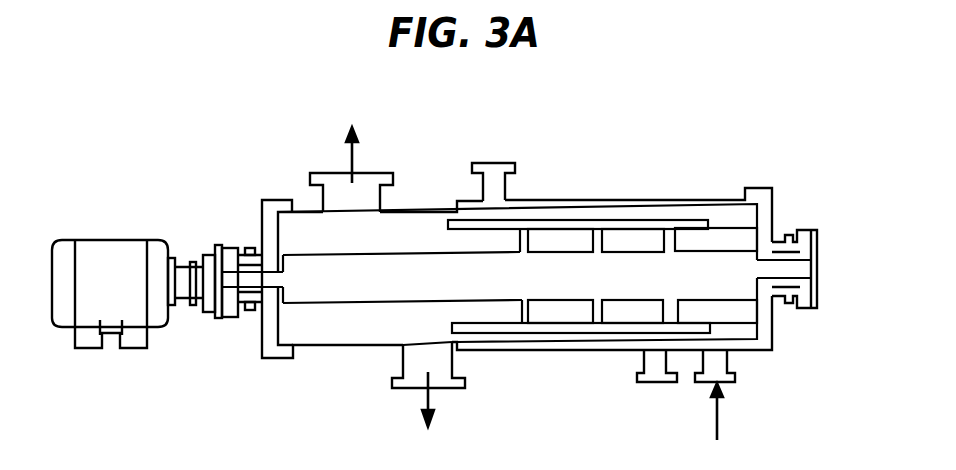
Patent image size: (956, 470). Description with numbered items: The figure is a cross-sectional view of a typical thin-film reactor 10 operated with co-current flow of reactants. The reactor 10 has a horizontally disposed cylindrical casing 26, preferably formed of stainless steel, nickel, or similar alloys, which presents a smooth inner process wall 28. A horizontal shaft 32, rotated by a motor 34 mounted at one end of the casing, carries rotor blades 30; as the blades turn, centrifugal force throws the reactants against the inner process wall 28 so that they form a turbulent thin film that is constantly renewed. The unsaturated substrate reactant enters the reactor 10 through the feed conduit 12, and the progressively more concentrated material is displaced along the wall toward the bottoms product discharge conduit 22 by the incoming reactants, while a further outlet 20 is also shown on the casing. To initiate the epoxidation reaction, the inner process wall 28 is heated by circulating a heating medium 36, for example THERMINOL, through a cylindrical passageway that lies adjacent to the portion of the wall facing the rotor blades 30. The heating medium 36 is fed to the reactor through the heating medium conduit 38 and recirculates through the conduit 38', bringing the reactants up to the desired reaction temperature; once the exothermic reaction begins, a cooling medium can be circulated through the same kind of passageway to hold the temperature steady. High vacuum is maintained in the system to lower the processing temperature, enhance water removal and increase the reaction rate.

The thin-film reactor 10 is at (644, 135).
The feed conduit 12 is at (730, 360).
The outlet nozzle 20 is at (318, 192).
The bottoms product discharge conduit 22 is at (425, 362).
The cylindrical casing 26 is at (690, 198).
The inner process wall 28 is at (601, 208).
The rotor blades 30 is at (462, 318).
The horizontal shaft 32 is at (552, 287).
The motor 34 is at (102, 245).
The heating medium 36 is at (549, 209).
The heating medium conduit 38 is at (630, 384).
The conduit 38' is at (504, 155).